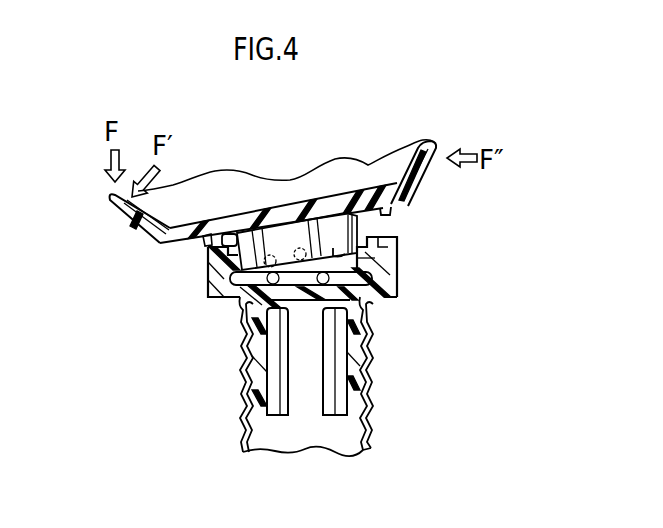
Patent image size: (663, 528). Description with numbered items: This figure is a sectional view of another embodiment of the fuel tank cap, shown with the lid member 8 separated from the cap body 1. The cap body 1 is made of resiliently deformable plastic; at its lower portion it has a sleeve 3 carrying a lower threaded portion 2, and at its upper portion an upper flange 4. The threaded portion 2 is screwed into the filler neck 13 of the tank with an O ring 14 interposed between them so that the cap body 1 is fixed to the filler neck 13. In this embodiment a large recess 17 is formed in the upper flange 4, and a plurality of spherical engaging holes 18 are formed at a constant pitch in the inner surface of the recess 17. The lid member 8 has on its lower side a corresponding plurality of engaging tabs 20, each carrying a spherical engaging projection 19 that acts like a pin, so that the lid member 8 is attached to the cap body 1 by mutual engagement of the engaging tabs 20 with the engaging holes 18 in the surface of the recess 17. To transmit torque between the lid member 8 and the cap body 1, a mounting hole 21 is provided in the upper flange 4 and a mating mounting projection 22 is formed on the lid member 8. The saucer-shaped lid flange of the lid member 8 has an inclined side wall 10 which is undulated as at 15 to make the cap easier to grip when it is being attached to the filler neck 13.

The cap body 1 is at (387, 303).
The lower threaded portion 2 is at (283, 352).
The sleeve 3 is at (352, 388).
The upper flange 4 is at (208, 282).
The lid member 8 is at (243, 209).
The side wall 10 is at (127, 206).
The filler neck 13 is at (350, 433).
The O ring 14 is at (240, 303).
The undulation 15 is at (367, 165).
The recess 17 is at (323, 225).
The engaging holes 18 is at (383, 280).
The engaging projections 19 is at (350, 228).
The engaging tabs 20 is at (264, 233).
The mounting hole 21 is at (375, 255).
The mounting projection 22 is at (392, 210).